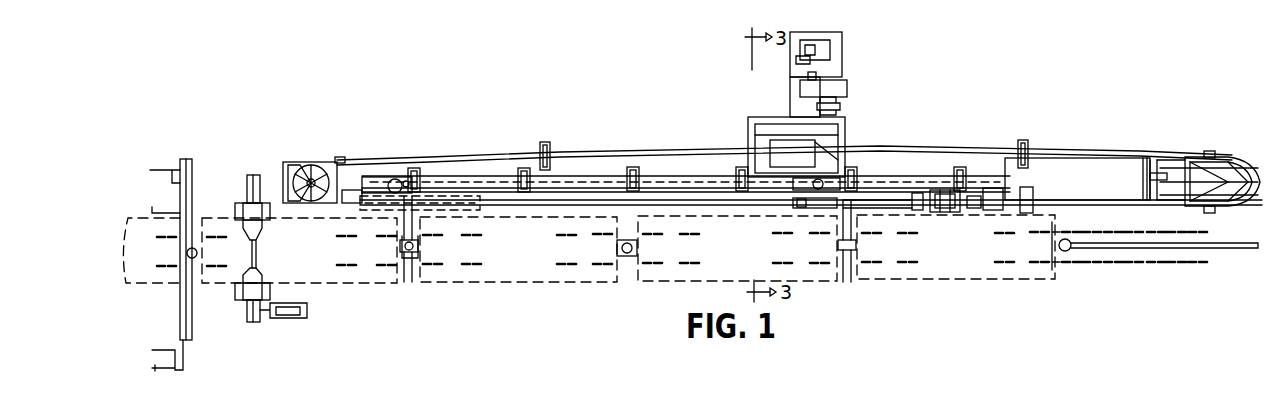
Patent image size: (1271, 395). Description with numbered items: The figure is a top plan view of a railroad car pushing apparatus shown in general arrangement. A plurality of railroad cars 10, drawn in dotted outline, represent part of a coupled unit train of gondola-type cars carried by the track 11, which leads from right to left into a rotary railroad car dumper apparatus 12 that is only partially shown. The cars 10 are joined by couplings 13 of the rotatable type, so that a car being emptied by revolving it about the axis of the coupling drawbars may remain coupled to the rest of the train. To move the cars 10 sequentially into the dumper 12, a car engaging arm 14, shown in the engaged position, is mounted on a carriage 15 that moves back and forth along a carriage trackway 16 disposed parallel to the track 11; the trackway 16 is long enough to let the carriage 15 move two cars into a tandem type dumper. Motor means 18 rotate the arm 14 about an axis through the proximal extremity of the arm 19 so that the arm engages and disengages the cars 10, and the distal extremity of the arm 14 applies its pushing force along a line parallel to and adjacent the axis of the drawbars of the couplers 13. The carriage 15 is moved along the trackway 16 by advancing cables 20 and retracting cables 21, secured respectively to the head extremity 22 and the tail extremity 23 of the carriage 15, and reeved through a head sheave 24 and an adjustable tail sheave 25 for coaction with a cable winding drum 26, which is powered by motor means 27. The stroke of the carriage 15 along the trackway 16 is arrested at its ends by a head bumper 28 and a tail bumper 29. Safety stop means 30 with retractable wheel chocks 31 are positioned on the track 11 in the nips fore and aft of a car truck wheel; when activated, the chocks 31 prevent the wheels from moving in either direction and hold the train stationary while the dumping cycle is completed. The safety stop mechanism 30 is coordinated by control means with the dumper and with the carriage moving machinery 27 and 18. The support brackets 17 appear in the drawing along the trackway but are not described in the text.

The railroad cars 10 is at (152, 283).
The track 11 is at (1191, 262).
The rotary railroad car dumper apparatus 12 is at (190, 340).
The couplings 13 is at (197, 270).
The car engaging arm 14 is at (420, 240).
The carriage 15 is at (456, 177).
The carriage trackway 16 is at (661, 183).
The support bracket 17 is at (414, 168).
The motor means 18 is at (950, 206).
The proximal extremity of the arm 19 is at (857, 206).
The advancing cables 20 is at (573, 156).
The retracting cables 21 is at (1082, 152).
The head extremity 22 is at (823, 208).
The tail extremity 23 is at (983, 208).
The head sheave 24 is at (300, 162).
The adjustable tail sheave 25 is at (1228, 157).
The cable winding drum 26 is at (808, 160).
The motor means 27 is at (838, 88).
The head bumper 28 is at (356, 190).
The tail bumper 29 is at (1034, 195).
The safety stop means 30 is at (252, 175).
The retractable wheel chocks 31 is at (266, 232).